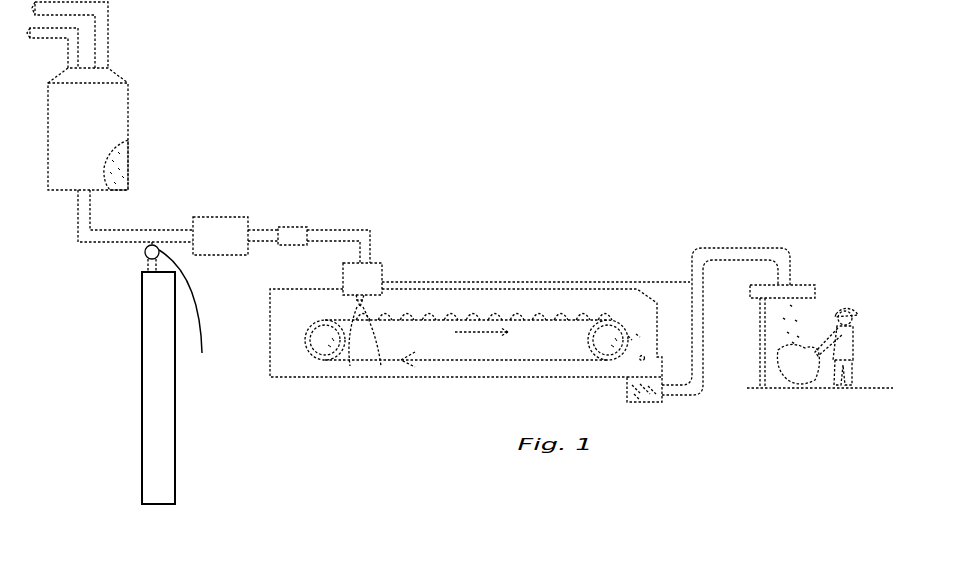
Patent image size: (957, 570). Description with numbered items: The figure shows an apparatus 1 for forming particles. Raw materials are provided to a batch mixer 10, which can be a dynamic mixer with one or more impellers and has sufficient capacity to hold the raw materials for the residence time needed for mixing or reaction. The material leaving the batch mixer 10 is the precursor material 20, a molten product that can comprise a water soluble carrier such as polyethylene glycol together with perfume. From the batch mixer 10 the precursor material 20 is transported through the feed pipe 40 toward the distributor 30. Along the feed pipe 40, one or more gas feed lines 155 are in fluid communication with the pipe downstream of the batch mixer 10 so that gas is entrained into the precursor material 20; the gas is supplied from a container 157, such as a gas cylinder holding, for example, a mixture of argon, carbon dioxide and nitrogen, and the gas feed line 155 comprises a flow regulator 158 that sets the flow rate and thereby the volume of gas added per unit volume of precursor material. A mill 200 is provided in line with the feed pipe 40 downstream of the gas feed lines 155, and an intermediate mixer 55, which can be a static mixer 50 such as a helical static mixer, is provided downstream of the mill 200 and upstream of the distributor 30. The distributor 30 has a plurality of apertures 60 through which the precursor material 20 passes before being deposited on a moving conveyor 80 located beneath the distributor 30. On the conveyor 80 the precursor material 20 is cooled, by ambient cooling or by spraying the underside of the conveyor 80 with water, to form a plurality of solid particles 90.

The apparatus 1 is at (497, 194).
The batch mixer 10 is at (78, 123).
The precursor material 20 is at (128, 160).
The distributor 30 is at (382, 265).
The feed pipe 40 is at (122, 243).
The static mixer 50 is at (292, 227).
The intermediate mixer 55 is at (285, 247).
The apertures 60 is at (380, 366).
The conveyor 80 is at (352, 322).
The particles 90 is at (458, 312).
The gas feed line 155 is at (143, 266).
The container 157 is at (161, 490).
The flow regulator 158 is at (194, 315).
The mill 200 is at (235, 210).